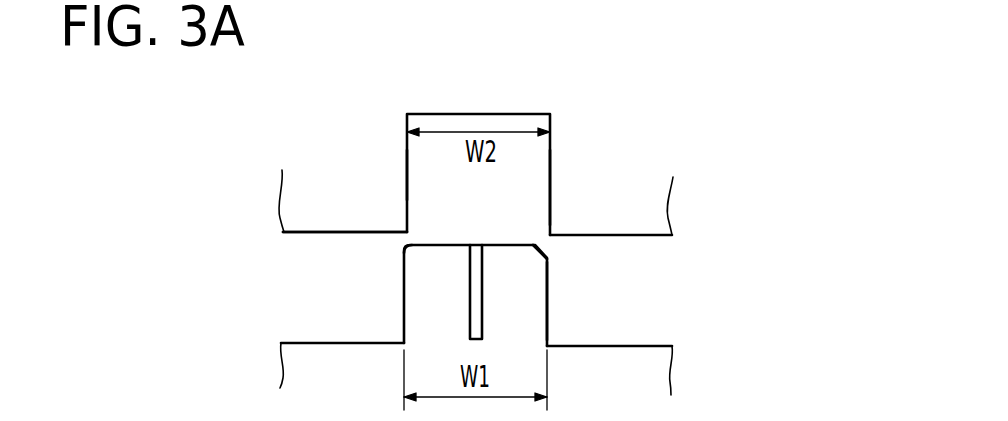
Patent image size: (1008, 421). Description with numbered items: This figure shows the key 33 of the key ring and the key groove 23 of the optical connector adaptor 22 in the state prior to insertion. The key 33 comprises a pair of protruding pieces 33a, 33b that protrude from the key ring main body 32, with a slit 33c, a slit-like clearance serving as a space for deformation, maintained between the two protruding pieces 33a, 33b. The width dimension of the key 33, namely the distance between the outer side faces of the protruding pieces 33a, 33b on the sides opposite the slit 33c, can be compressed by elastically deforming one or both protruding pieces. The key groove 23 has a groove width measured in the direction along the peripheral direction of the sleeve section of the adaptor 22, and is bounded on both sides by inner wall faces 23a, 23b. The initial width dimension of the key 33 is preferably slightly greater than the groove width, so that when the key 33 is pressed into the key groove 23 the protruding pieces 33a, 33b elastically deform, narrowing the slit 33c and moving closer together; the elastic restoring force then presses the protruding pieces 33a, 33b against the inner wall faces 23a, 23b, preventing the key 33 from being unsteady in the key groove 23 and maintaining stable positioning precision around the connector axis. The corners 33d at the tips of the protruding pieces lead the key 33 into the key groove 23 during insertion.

The optical connector adaptor 22 is at (290, 233).
The key groove 23 is at (535, 172).
The inner wall face 23a is at (407, 155).
The inner wall face 23b is at (550, 198).
The key ring main body 32 is at (672, 347).
The key 33 is at (548, 330).
The protruding piece 33a is at (548, 296).
The protruding piece 33b is at (404, 316).
The slit 33c is at (471, 246).
The corner 33d is at (405, 247).